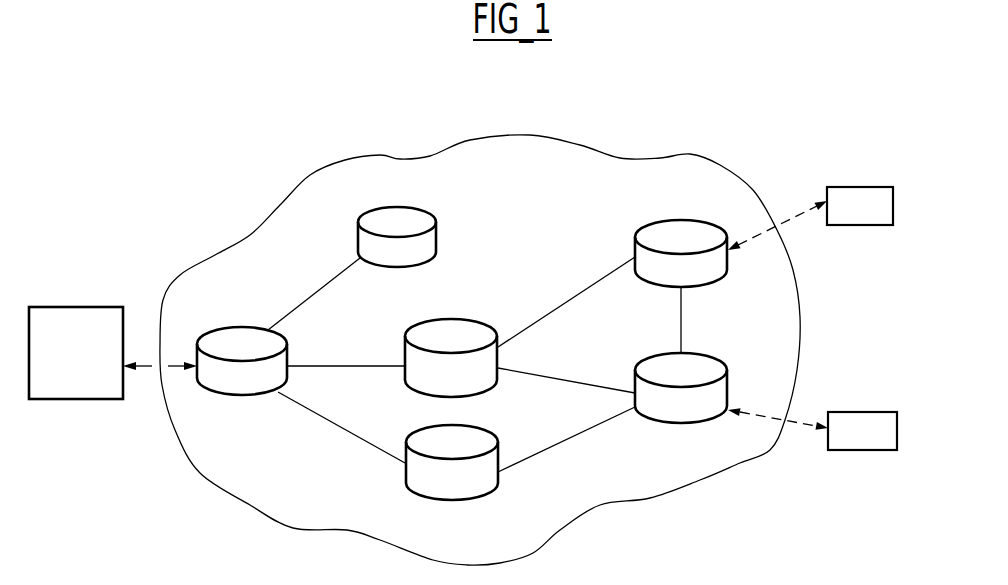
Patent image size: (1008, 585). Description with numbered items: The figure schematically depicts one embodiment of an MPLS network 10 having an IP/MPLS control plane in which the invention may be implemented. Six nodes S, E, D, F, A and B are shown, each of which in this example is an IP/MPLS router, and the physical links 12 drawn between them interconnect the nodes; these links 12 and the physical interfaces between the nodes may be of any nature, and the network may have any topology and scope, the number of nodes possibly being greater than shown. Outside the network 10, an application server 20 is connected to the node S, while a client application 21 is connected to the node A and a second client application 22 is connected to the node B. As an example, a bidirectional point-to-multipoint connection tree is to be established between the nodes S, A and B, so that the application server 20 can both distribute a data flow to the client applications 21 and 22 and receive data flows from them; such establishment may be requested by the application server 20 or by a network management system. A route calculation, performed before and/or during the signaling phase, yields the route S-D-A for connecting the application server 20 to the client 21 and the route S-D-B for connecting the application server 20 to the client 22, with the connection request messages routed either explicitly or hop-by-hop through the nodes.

The network 10 is at (293, 178).
The physical links 12 is at (328, 275).
The application server 20 is at (80, 307).
The client application 21 is at (865, 187).
The client application 22 is at (862, 450).
The node S is at (233, 327).
The node E is at (405, 205).
The node D is at (460, 318).
The node F is at (450, 500).
The node A is at (675, 220).
The node B is at (676, 423).